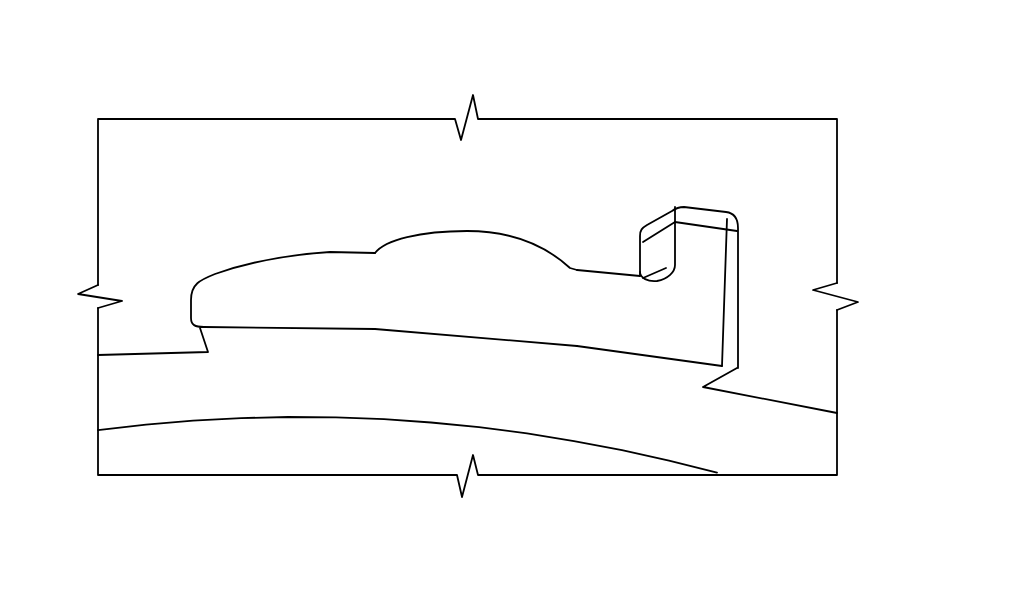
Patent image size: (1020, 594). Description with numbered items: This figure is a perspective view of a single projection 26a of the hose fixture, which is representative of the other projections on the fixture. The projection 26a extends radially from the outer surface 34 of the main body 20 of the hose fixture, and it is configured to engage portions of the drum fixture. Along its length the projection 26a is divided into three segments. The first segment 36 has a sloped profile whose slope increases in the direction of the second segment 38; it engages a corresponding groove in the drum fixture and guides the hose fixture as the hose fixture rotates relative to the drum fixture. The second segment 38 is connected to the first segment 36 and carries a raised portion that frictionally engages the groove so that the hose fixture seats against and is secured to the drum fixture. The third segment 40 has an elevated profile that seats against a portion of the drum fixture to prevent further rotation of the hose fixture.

The main body 20 is at (70, 257).
The projection 26a is at (852, 20).
The outer surface 34 is at (873, 355).
The first segment 36 is at (372, 199).
The second segment 38 is at (577, 199).
The third segment 40 is at (757, 199).